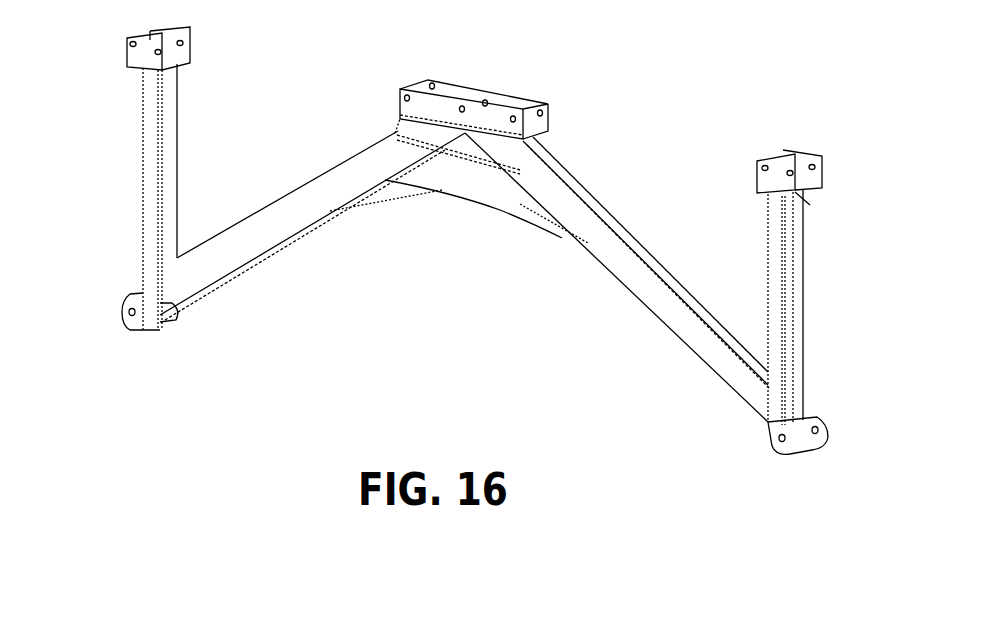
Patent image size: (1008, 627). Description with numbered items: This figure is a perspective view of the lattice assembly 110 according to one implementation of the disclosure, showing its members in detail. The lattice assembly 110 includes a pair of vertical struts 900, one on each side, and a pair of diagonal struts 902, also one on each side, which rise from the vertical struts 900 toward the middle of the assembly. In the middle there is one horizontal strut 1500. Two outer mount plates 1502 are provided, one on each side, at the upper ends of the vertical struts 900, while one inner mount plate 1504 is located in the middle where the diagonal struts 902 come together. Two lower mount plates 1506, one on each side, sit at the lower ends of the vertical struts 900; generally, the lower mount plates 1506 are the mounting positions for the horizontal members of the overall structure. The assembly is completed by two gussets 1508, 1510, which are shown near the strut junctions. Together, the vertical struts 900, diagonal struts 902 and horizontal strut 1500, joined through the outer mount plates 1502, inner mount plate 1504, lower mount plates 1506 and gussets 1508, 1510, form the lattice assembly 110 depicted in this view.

The lattice assembly 110 is at (447, 310).
The vertical struts 900 is at (145, 145).
The diagonal struts 902 is at (283, 200).
The horizontal strut 1500 is at (462, 199).
The outer mount plates 1502 is at (125, 53).
The inner mount plate 1504 is at (515, 101).
The lower mount plates 1506 is at (127, 323).
The gusset 1508 is at (810, 207).
The gusset 1510 is at (373, 203).